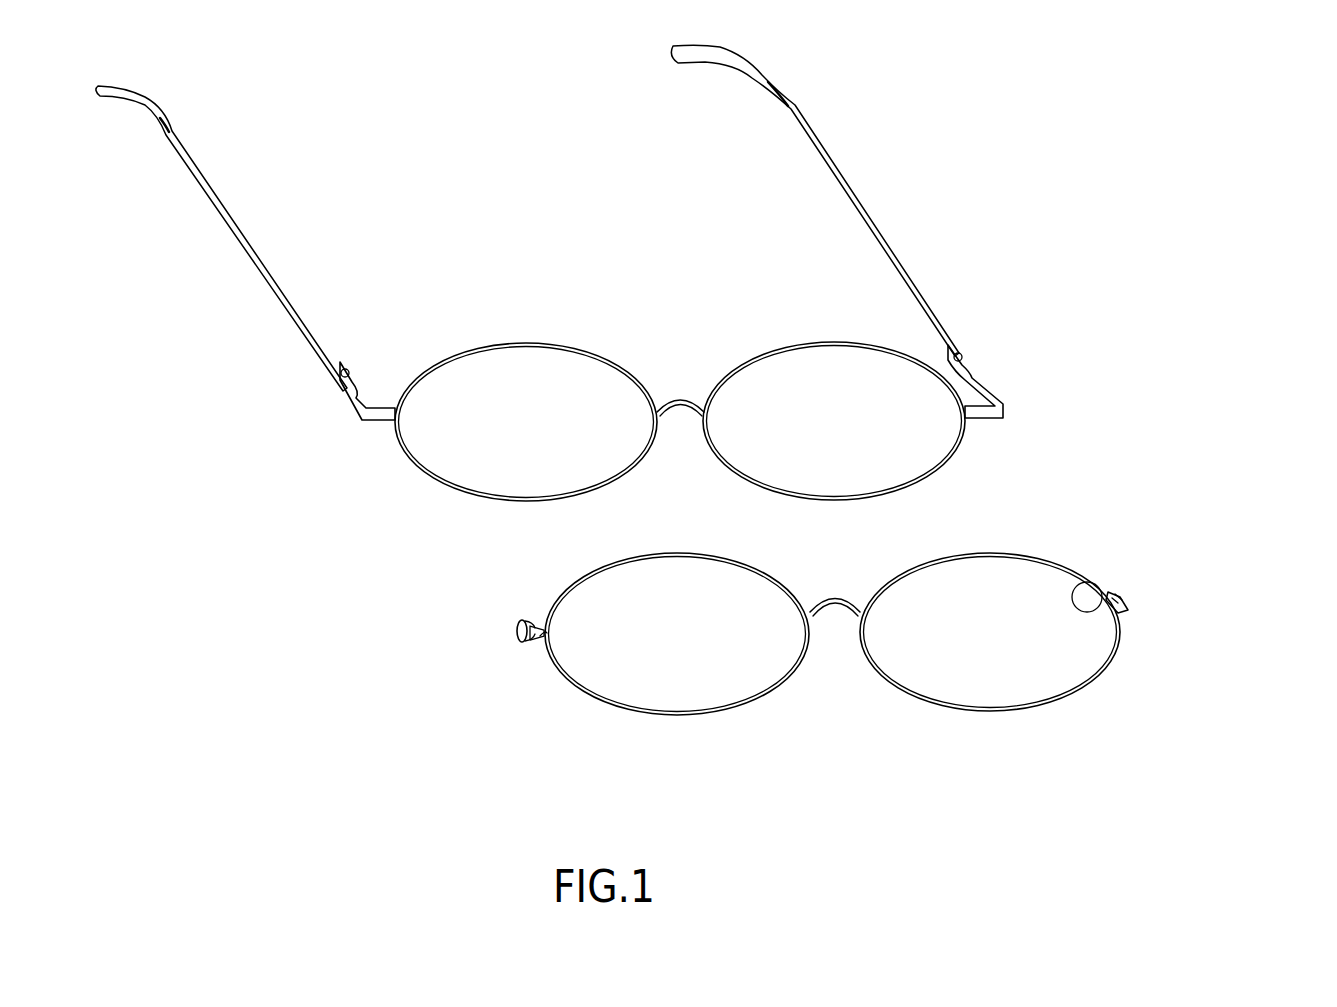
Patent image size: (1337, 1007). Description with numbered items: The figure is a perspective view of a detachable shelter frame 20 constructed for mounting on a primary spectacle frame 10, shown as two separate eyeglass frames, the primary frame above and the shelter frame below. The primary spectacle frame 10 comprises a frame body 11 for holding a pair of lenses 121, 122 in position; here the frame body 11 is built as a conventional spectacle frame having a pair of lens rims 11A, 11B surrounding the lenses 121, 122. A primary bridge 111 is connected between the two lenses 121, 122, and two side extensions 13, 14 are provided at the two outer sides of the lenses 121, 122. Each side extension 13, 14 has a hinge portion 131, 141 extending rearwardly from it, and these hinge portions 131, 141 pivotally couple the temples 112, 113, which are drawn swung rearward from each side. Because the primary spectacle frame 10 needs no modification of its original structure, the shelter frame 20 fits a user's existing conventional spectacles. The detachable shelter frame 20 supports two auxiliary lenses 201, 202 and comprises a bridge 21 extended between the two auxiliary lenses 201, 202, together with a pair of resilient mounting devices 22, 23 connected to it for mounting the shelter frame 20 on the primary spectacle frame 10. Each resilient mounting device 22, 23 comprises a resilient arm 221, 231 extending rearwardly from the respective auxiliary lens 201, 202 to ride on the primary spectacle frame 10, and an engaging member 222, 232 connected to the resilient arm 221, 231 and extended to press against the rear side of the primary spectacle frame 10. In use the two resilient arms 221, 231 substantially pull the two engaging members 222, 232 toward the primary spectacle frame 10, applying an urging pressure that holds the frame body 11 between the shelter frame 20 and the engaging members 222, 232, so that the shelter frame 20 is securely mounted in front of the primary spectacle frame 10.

The primary spectacle frame 10 is at (538, 210).
The frame body 11 is at (535, 293).
The lens rim 11A is at (605, 486).
The lens rim 11B is at (855, 498).
The primary bridge 111 is at (676, 398).
The temple 112 is at (260, 260).
The temple 113 is at (870, 222).
The lens 121 is at (484, 374).
The lens 122 is at (778, 375).
The side extension 13 is at (375, 422).
The hinge portion 131 is at (337, 392).
The side extension 14 is at (1010, 397).
The hinge portion 141 is at (957, 347).
The detachable shelter frame 20 is at (1202, 758).
The auxiliary lens 201 is at (628, 692).
The auxiliary lens 202 is at (1050, 685).
The bridge 21 is at (835, 602).
The resilient mounting device 22 is at (408, 688).
The resilient arm 221 is at (542, 648).
The engaging member 222 is at (512, 632).
The resilient mounting device 23 is at (1232, 637).
The resilient arm 231 is at (1132, 610).
The engaging member 232 is at (1077, 573).